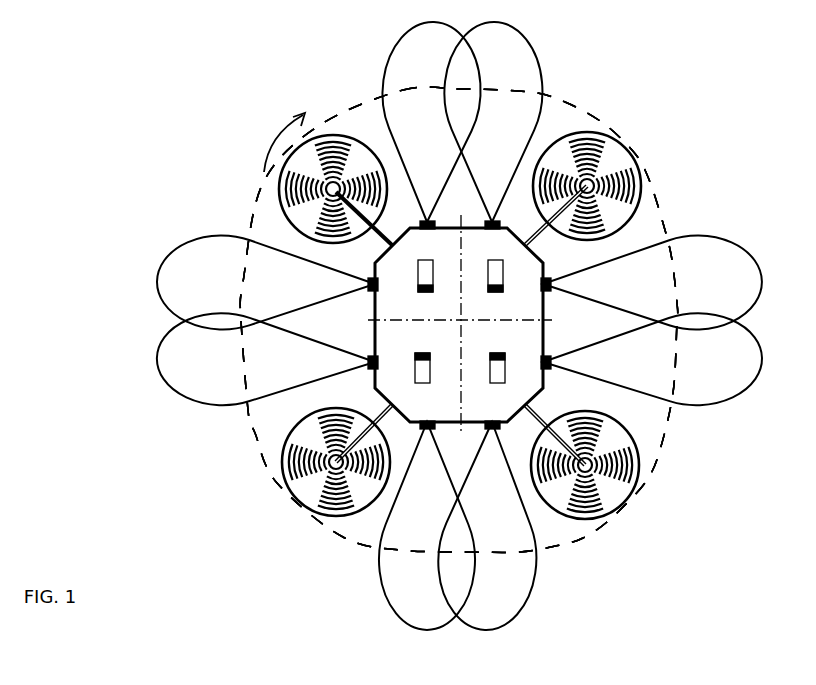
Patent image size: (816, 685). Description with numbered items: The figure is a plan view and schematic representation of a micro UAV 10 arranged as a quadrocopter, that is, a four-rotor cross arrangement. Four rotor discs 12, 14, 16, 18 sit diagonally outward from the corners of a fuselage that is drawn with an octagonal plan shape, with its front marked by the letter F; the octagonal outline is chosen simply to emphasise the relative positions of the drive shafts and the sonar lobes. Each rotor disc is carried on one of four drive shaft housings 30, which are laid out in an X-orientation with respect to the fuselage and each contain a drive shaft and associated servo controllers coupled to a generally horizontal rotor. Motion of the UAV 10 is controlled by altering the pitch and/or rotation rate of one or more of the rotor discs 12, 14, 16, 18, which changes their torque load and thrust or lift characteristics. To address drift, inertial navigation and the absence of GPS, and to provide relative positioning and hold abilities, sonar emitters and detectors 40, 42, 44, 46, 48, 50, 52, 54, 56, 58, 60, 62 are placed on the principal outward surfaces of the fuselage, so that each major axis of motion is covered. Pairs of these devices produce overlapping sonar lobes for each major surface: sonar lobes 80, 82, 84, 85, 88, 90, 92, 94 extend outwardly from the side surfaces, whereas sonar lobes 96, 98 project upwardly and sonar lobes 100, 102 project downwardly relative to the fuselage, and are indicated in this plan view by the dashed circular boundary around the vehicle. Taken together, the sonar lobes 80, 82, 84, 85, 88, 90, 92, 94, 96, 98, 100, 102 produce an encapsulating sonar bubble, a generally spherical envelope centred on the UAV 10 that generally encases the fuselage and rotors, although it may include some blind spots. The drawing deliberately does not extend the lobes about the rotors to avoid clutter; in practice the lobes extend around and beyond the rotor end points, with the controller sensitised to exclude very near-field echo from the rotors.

The micro UAV 10 is at (545, 330).
The rotor disc 12 is at (280, 181).
The rotor disc 14 is at (634, 152).
The rotor disc 16 is at (281, 470).
The rotor disc 18 is at (636, 497).
The drive shaft housing 30 is at (380, 237).
The sonar emitter and detector 40 is at (418, 282).
The sonar emitter and detector 42 is at (497, 272).
The sonar emitter and detector 44 is at (552, 287).
The sonar emitter and detector 46 is at (552, 364).
The sonar emitter and detector 48 is at (502, 355).
The sonar emitter and detector 50 is at (415, 360).
The sonar emitter and detector 52 is at (490, 430).
The sonar emitter and detector 54 is at (427, 430).
The sonar emitter and detector 56 is at (367, 362).
The sonar emitter and detector 58 is at (367, 284).
The sonar emitter and detector 60 is at (430, 220).
The sonar emitter and detector 62 is at (490, 220).
The sonar lobe 80 is at (190, 393).
The sonar lobe 82 is at (167, 250).
The sonar lobe 84 is at (398, 49).
The sonar lobe 85 is at (518, 35).
The sonar lobe 88 is at (742, 255).
The sonar lobe 90 is at (740, 395).
The sonar lobe 92 is at (515, 615).
The sonar lobe 94 is at (390, 610).
The sonar lobe 96 is at (307, 519).
The sonar lobe 98 is at (459, 319).
The sonar lobe 100 is at (459, 319).
The sonar lobe 102 is at (459, 319).